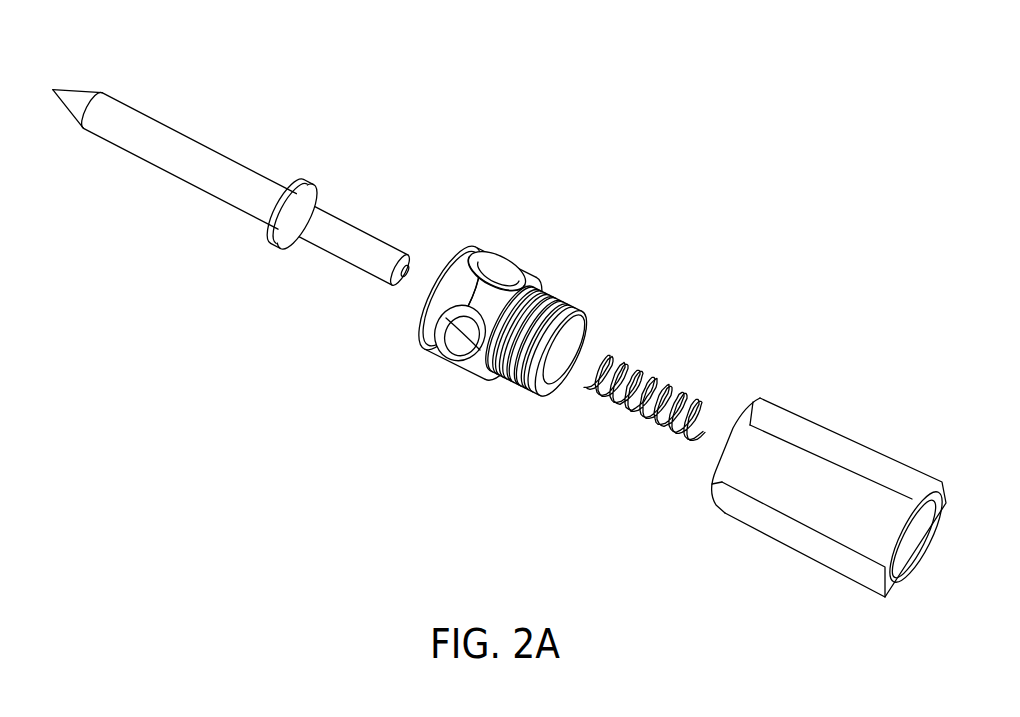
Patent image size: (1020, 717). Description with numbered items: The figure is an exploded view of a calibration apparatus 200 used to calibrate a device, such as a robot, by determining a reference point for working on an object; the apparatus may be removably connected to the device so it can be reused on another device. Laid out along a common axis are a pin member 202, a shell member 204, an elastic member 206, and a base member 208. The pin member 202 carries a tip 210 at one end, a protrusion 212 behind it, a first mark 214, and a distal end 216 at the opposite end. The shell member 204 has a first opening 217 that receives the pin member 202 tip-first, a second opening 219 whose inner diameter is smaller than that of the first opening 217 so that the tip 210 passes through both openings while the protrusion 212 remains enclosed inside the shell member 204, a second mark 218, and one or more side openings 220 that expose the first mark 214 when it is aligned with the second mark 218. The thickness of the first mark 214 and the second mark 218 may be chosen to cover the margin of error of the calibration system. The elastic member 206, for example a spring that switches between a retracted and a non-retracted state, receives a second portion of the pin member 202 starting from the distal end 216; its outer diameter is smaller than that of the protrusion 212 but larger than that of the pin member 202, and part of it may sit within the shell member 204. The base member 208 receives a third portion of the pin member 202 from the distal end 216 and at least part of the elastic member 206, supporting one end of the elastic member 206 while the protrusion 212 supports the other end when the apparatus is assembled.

The calibration apparatus 200 is at (684, 157).
The pin member 202 is at (296, 96).
The shell member 204 is at (572, 254).
The elastic member 206 is at (665, 385).
The base member 208 is at (845, 440).
The tip 210 is at (53, 88).
The protrusion 212 is at (312, 197).
The first mark 214 is at (293, 187).
The distal end 216 is at (405, 278).
The first opening 217 is at (592, 344).
The second mark 218 is at (467, 297).
The second opening 219 is at (427, 258).
The side openings 220 is at (512, 252).